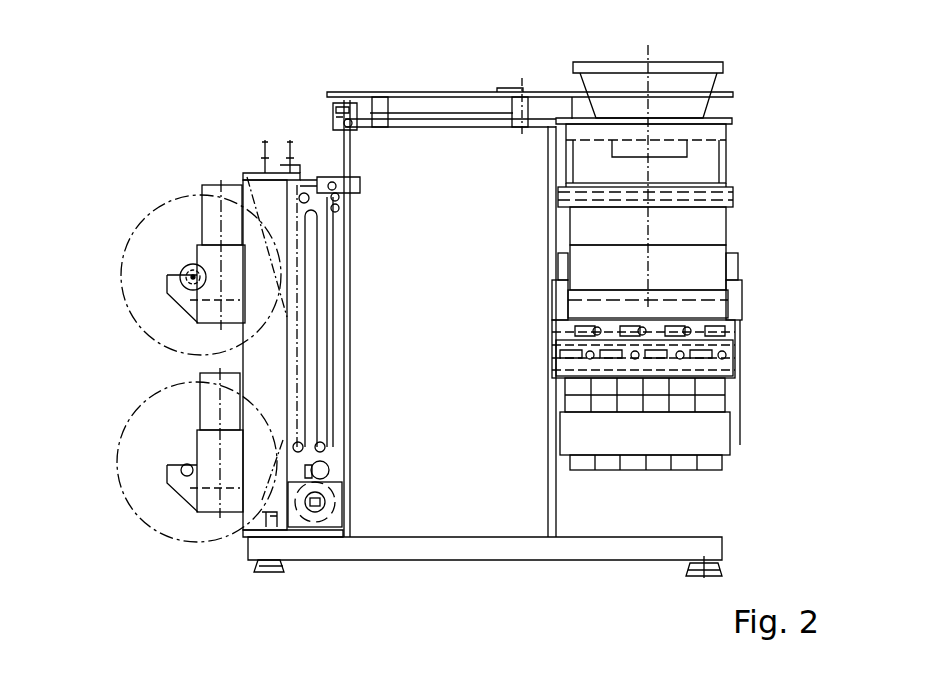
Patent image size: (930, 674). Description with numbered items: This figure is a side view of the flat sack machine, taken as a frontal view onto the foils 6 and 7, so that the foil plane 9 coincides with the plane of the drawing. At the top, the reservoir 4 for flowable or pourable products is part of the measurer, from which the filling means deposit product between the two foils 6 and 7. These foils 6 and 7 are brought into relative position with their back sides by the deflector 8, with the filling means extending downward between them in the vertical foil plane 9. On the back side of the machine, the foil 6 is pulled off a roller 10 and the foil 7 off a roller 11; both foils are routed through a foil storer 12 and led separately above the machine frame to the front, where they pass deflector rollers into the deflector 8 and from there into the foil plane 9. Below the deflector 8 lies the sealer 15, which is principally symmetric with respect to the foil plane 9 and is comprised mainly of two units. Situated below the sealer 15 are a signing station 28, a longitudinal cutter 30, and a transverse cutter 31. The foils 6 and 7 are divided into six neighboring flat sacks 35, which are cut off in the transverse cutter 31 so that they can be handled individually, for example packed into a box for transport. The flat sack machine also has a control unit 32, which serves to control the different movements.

The reservoir 4 is at (604, 80).
The foil 6 is at (278, 345).
The foil 7 is at (277, 458).
The deflector 8 is at (720, 195).
The foil plane 9 is at (690, 232).
The roller 10 is at (133, 280).
The roller 11 is at (138, 458).
The foil storer 12 is at (285, 372).
The sealer 15 is at (700, 273).
The signing station 28 is at (727, 341).
The longitudinal cutter 30 is at (737, 363).
The transverse cutter 31 is at (682, 437).
The control unit 32 is at (400, 165).
The flat sacks 35 is at (657, 385).